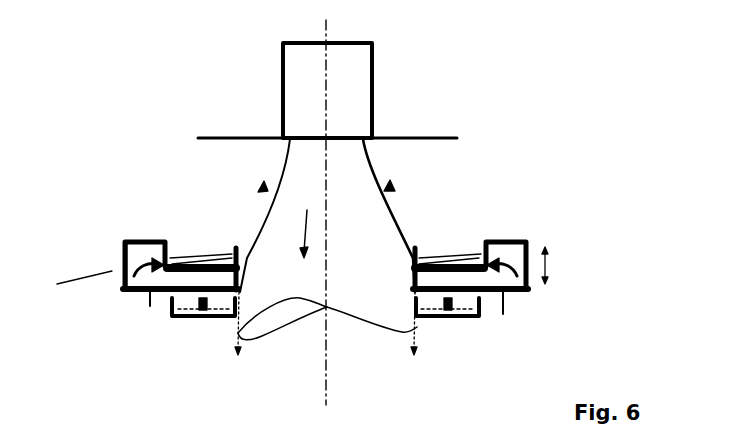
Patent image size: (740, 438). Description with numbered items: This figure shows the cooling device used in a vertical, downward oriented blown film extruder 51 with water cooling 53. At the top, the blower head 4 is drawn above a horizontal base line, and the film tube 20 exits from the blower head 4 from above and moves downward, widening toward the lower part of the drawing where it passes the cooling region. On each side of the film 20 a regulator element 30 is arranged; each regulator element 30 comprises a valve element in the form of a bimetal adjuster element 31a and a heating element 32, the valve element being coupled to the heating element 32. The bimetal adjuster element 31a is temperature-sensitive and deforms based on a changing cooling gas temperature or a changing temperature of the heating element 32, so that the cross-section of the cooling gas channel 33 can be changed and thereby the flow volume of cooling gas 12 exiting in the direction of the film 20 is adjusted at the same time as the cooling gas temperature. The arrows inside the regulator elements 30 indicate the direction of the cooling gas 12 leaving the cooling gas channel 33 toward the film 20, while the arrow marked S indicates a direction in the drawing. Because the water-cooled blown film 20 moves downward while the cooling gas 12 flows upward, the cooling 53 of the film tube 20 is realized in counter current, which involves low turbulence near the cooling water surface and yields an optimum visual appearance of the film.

The blower head 4 is at (372, 58).
The film tube 20 is at (368, 156).
The cooling gas 12 is at (384, 190).
The regulator element 30 is at (65, 210).
The bimetal adjuster element 31a is at (227, 275).
The heating element 32 is at (200, 268).
The cooling gas channel 33 is at (188, 268).
The blown film extruder 51 is at (524, 179).
The water cooling 53 is at (173, 300).
The direction S is at (104, 266).